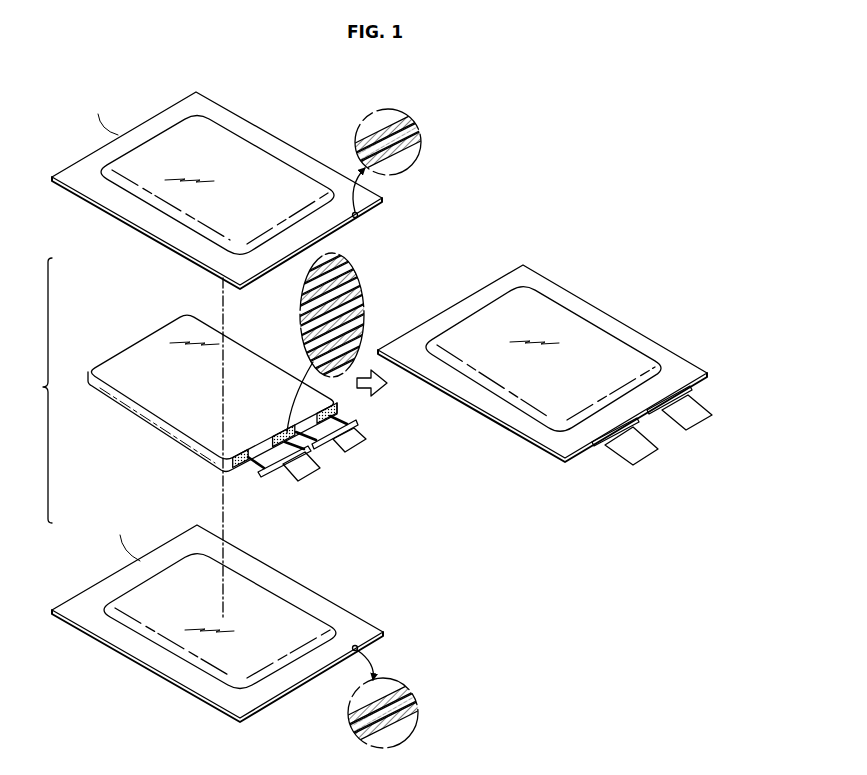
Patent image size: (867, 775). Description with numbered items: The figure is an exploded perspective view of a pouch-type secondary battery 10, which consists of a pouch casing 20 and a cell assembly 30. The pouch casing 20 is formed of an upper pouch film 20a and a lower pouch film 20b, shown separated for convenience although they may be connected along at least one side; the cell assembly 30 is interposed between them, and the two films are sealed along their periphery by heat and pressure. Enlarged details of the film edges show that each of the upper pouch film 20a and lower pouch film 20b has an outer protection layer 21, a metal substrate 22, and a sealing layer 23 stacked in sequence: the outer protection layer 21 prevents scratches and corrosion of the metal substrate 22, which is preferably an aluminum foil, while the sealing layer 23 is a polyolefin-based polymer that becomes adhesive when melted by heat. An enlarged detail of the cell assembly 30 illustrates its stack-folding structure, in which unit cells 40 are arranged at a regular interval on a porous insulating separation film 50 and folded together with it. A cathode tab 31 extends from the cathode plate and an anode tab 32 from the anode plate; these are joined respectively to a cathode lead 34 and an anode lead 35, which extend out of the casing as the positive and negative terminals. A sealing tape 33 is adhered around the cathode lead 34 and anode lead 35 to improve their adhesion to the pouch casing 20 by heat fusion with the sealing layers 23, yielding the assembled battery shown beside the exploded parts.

The pouch-type secondary battery 10 is at (604, 300).
The pouch casing 20 is at (481, 410).
The upper pouch film 20a is at (90, 190).
The lower pouch film 20b is at (90, 598).
The outer protection layer 21 is at (401, 120).
The metal substrate 22 is at (412, 128).
The sealing layer 23 is at (421, 135).
The cell assembly 30 is at (258, 339).
The cathode tab 31 is at (326, 412).
The anode tab 32 is at (247, 468).
The sealing tape 33 is at (358, 425).
The cathode lead 34 is at (353, 452).
The anode lead 35 is at (308, 480).
The unit cell 40 is at (367, 290).
The separation film 50 is at (346, 276).